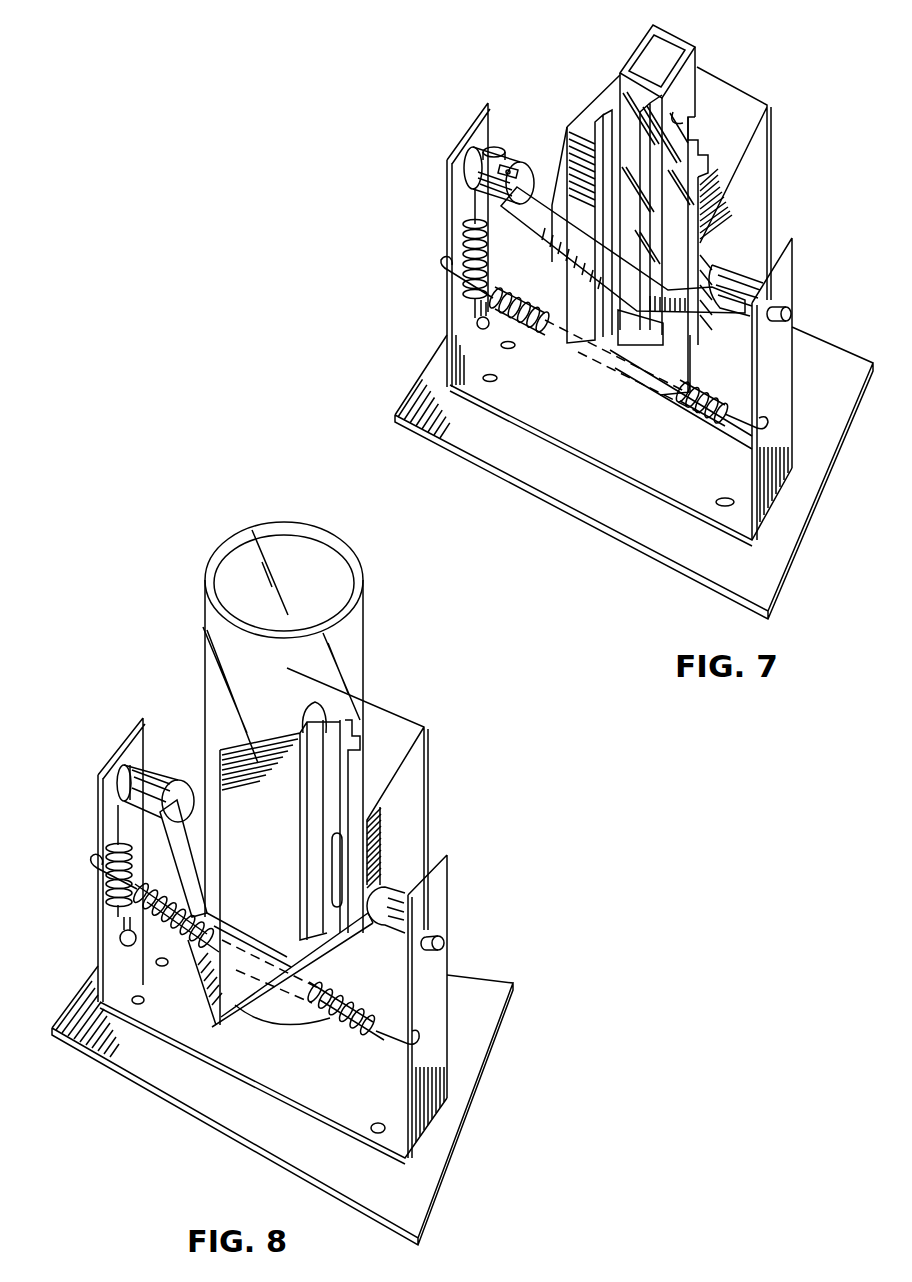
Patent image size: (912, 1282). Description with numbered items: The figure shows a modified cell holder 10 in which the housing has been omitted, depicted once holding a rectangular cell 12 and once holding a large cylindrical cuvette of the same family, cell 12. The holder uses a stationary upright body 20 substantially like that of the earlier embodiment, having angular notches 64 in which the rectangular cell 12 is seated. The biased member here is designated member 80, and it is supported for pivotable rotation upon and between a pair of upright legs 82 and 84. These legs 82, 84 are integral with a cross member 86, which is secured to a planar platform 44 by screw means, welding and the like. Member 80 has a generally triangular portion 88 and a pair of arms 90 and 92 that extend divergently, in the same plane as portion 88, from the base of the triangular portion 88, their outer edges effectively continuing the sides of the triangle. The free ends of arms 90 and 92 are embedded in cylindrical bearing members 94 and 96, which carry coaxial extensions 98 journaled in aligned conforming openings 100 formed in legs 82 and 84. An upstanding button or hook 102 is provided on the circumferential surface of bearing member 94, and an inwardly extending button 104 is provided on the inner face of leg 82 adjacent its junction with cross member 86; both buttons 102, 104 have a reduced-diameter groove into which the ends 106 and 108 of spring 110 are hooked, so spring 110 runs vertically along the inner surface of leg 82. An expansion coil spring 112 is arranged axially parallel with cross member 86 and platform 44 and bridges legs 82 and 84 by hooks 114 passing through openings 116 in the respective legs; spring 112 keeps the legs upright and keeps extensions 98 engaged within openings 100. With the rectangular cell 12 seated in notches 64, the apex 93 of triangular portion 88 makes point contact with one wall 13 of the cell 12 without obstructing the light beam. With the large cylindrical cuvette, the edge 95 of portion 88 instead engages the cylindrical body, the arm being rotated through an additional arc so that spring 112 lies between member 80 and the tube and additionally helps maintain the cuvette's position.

In FIG. 7, the holder 10 is at (543, 69).
In FIG. 8, the holder 10 is at (432, 756).
In FIG. 7, the cell 12 is at (668, 46).
In FIG. 8, the cell 12 is at (345, 635).
In FIG. 7, the wall of cell 13 is at (616, 95).
In FIG. 7, the upright body 20 is at (743, 127).
In FIG. 7, the planar platform 44 is at (643, 530).
In FIG. 8, the planar platform 44 is at (250, 1110).
In FIG. 7, the notches 64 is at (680, 115).
In FIG. 8, the notches 64 is at (315, 723).
In FIG. 7, the biased member 80 is at (550, 198).
In FIG. 8, the biased member 80 is at (196, 872).
In FIG. 7, the upright leg 82 is at (447, 183).
In FIG. 7, the upright leg 84 is at (787, 285).
In FIG. 7, the cross member 86 is at (625, 465).
In FIG. 7, the triangular portion 88 is at (605, 248).
In FIG. 8, the triangular portion 88 is at (218, 998).
In FIG. 7, the arm 90 is at (547, 230).
In FIG. 7, the arm 92 is at (700, 303).
In FIG. 7, the apex 93 is at (630, 318).
In FIG. 7, the cylindrical bearing member 94 is at (477, 157).
In FIG. 8, the cylindrical bearing member 94 is at (158, 783).
In FIG. 8, the edge 95 is at (274, 906).
In FIG. 7, the cylindrical bearing member 96 is at (735, 280).
In FIG. 8, the cylindrical bearing member 96 is at (398, 902).
In FIG. 7, the coaxial extensions 98 is at (790, 315).
In FIG. 7, the openings 100 is at (773, 323).
In FIG. 8, the openings 100 is at (428, 935).
In FIG. 7, the button or hook 102 is at (497, 148).
In FIG. 7, the button 104 is at (485, 330).
In FIG. 7, the end of spring 106 is at (514, 168).
In FIG. 7, the end of spring 108 is at (478, 307).
In FIG. 7, the spring 110 is at (465, 243).
In FIG. 8, the spring 110 is at (108, 858).
In FIG. 7, the expansion coil spring 112 is at (575, 300).
In FIG. 8, the expansion coil spring 112 is at (338, 1022).
In FIG. 7, the hooks 114 is at (440, 283).
In FIG. 7, the openings 116 is at (765, 420).
In FIG. 8, the openings 116 is at (422, 1045).